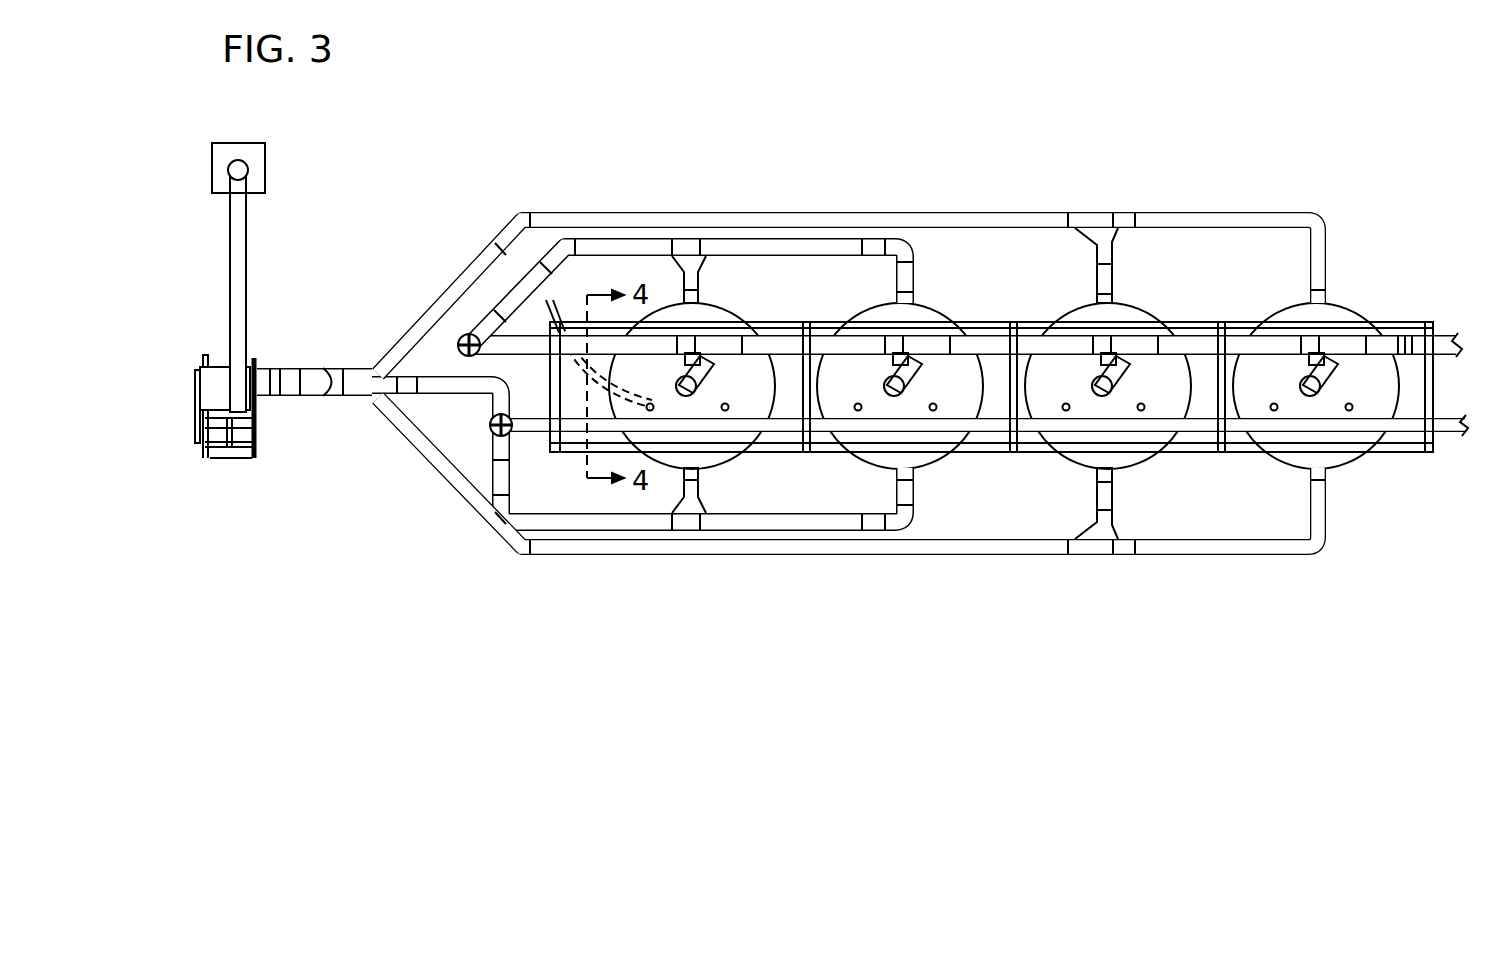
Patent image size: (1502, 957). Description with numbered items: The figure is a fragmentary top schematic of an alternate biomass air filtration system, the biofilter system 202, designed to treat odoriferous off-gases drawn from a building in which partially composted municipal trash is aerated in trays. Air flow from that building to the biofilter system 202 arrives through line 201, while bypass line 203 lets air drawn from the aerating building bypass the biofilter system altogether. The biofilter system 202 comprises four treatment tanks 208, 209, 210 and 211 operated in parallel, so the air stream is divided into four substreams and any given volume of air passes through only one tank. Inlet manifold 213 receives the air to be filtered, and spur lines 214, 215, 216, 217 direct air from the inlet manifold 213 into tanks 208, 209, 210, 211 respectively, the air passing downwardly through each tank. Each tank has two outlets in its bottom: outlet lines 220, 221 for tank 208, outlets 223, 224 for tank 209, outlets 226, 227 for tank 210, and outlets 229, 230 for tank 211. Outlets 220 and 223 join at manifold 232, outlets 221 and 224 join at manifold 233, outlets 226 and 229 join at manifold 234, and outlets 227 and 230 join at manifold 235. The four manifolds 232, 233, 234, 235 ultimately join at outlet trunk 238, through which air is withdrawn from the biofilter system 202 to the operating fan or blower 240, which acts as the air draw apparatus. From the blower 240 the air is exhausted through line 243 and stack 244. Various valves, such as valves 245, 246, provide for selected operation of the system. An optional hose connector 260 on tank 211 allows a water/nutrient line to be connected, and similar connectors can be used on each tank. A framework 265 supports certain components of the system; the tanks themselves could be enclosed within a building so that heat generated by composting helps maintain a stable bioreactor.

The line 201 is at (1446, 334).
The biofilter system 202 is at (1362, 252).
The bypass line 203 is at (1452, 440).
The treatment tank 208 is at (1272, 318).
The treatment tank 209 is at (1072, 320).
The treatment tank 210 is at (882, 312).
The treatment tank 211 is at (722, 322).
The inlet manifold 213 is at (1406, 334).
The spur line 214 is at (1326, 390).
The spur line 215 is at (1116, 390).
The spur line 216 is at (910, 390).
The spur line 217 is at (700, 390).
The outlet line 220 is at (1311, 258).
The outlet line 221 is at (1327, 490).
The outlet line 223 is at (1112, 290).
The outlet line 224 is at (1114, 490).
The outlet line 226 is at (916, 290).
The outlet line 227 is at (916, 489).
The outlet line 229 is at (700, 290).
The outlet line 230 is at (700, 488).
The manifold 232 is at (1104, 222).
The manifold 233 is at (1102, 552).
The manifold 234 is at (680, 245).
The manifold 235 is at (668, 528).
The outlet trunk 238 is at (360, 370).
The operating fan or blower 240 is at (198, 386).
The line 243 is at (246, 256).
The stack 244 is at (246, 170).
The valve 245 is at (455, 340).
The valve 246 is at (490, 425).
The hose connector 260 is at (648, 404).
The framework 265 is at (985, 325).